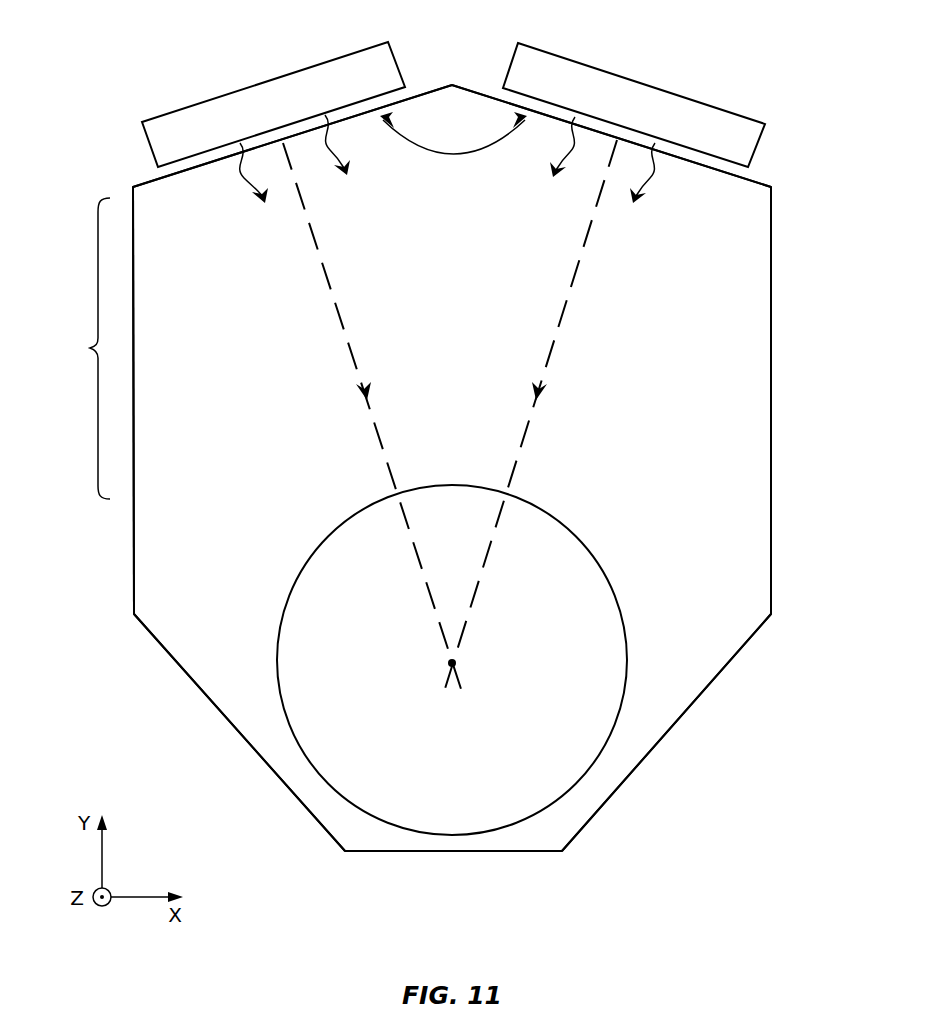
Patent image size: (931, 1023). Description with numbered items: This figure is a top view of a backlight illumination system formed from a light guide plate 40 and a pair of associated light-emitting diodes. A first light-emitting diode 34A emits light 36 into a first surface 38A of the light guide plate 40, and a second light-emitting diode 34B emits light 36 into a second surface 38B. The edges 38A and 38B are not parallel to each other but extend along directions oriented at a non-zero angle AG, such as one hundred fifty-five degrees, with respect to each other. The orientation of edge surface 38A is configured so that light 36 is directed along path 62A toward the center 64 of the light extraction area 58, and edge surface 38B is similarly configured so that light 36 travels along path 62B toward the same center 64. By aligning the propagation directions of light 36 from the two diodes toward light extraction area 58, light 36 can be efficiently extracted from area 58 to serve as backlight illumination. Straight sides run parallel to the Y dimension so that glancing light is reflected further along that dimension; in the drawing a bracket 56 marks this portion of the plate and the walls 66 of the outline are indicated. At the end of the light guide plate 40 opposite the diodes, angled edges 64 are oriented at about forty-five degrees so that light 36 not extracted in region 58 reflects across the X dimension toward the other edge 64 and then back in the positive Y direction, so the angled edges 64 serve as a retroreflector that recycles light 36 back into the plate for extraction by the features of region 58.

The first light-emitting diode 34A is at (283, 72).
The second light-emitting diode 34B is at (695, 97).
The light 36 is at (248, 196).
The first surface 38A is at (425, 90).
The second surface 38B is at (760, 180).
The light guide plate 40 is at (755, 470).
The upper portion height 56 is at (85, 348).
The light extraction area 58 is at (598, 555).
The path 62A is at (347, 330).
The path 62B is at (530, 425).
The center of light extraction area; angled edges 64 is at (458, 662).
The housing wall 66 is at (132, 548).
The non-zero angle AG is at (453, 147).